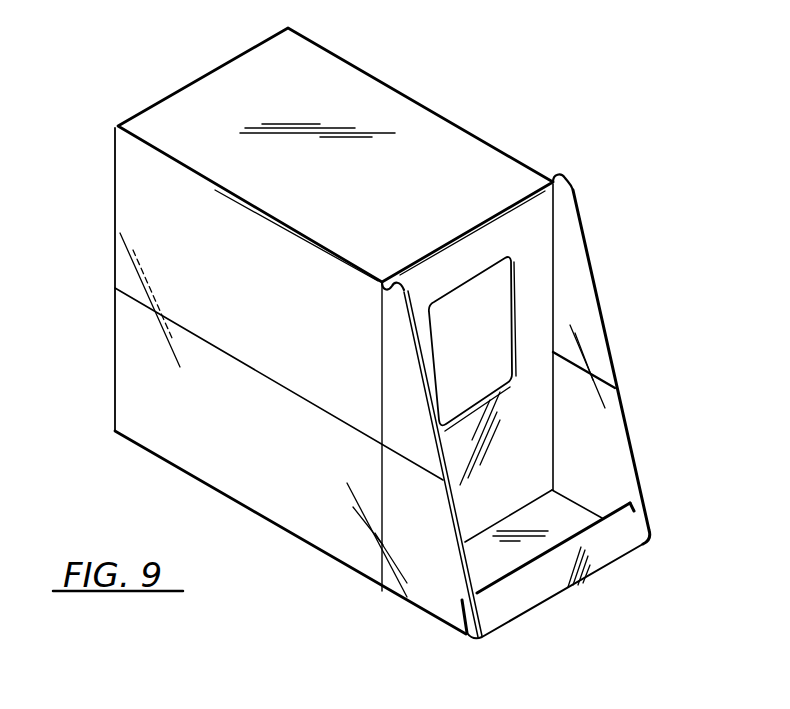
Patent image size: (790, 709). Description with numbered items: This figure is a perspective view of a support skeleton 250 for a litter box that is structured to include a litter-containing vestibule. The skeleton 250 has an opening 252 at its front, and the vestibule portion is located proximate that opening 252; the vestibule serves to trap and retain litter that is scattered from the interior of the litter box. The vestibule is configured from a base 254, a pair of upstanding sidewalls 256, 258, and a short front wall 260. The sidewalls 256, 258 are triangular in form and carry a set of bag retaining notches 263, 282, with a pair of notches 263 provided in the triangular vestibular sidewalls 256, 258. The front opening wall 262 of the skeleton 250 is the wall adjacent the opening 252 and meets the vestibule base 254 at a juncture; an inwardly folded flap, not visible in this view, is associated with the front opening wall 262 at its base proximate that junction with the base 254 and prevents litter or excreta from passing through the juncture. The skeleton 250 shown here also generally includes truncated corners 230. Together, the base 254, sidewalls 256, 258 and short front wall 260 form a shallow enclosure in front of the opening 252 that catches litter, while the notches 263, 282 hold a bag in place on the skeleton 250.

The truncated corners 230 is at (288, 28).
The skeleton 250 is at (490, 124).
The opening 252 is at (489, 341).
The base 254 is at (571, 531).
The upstanding sidewall 256 is at (577, 287).
The upstanding sidewall 258 is at (400, 381).
The short front wall 260 is at (632, 550).
The front opening wall 262 is at (531, 478).
The bag retaining notches 263 is at (389, 283).
The bag retaining notches 282 is at (462, 608).